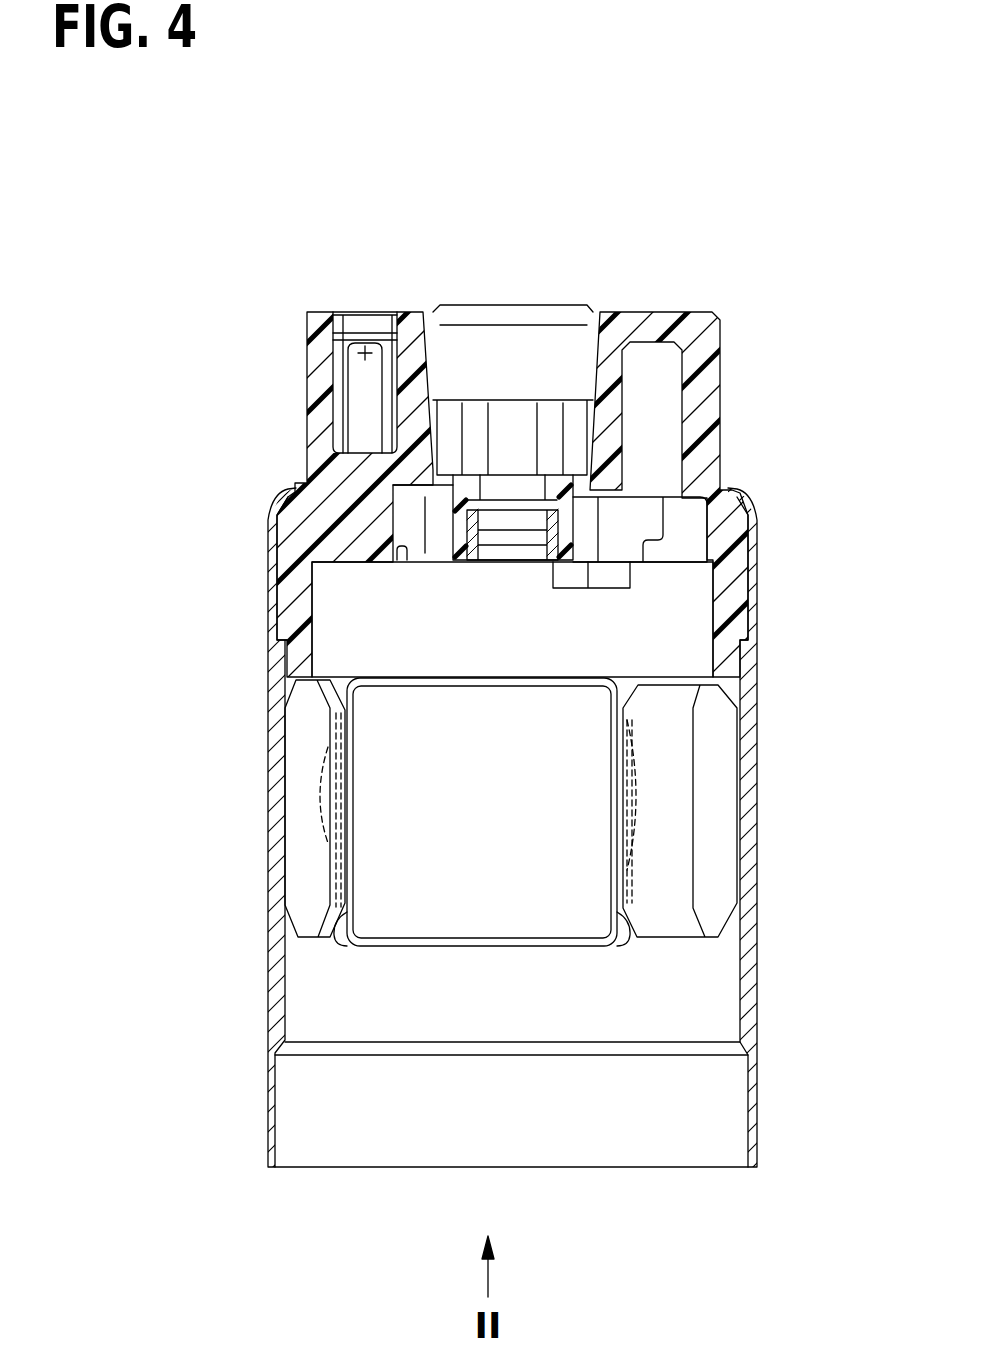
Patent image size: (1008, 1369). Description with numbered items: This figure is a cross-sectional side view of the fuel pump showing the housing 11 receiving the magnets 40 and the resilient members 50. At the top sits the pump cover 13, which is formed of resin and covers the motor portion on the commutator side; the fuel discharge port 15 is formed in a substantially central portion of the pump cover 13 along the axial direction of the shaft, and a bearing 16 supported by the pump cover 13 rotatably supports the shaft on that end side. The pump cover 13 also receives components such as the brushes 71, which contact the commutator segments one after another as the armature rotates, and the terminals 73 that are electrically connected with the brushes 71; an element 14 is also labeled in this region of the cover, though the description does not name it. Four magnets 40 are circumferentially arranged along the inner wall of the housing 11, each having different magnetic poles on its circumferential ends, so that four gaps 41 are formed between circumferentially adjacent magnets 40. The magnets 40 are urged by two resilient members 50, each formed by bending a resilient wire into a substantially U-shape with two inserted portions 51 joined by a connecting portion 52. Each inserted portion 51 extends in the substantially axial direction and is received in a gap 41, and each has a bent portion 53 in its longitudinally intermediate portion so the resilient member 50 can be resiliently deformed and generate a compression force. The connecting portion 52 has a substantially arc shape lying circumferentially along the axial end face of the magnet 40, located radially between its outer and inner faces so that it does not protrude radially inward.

The housing 11 is at (752, 680).
The pump cover 13 is at (310, 385).
The terminal 14 is at (408, 520).
The fuel discharge port 15 is at (482, 305).
The bearing 16 is at (560, 513).
The magnet 40 is at (390, 690).
The gap 41 is at (632, 942).
The resilient member 50 is at (338, 963).
The inserted portion 51 is at (327, 875).
The connecting portion 52 is at (410, 947).
The bent portion 53 is at (320, 806).
The brush 71 is at (630, 580).
The terminal 73 is at (363, 345).